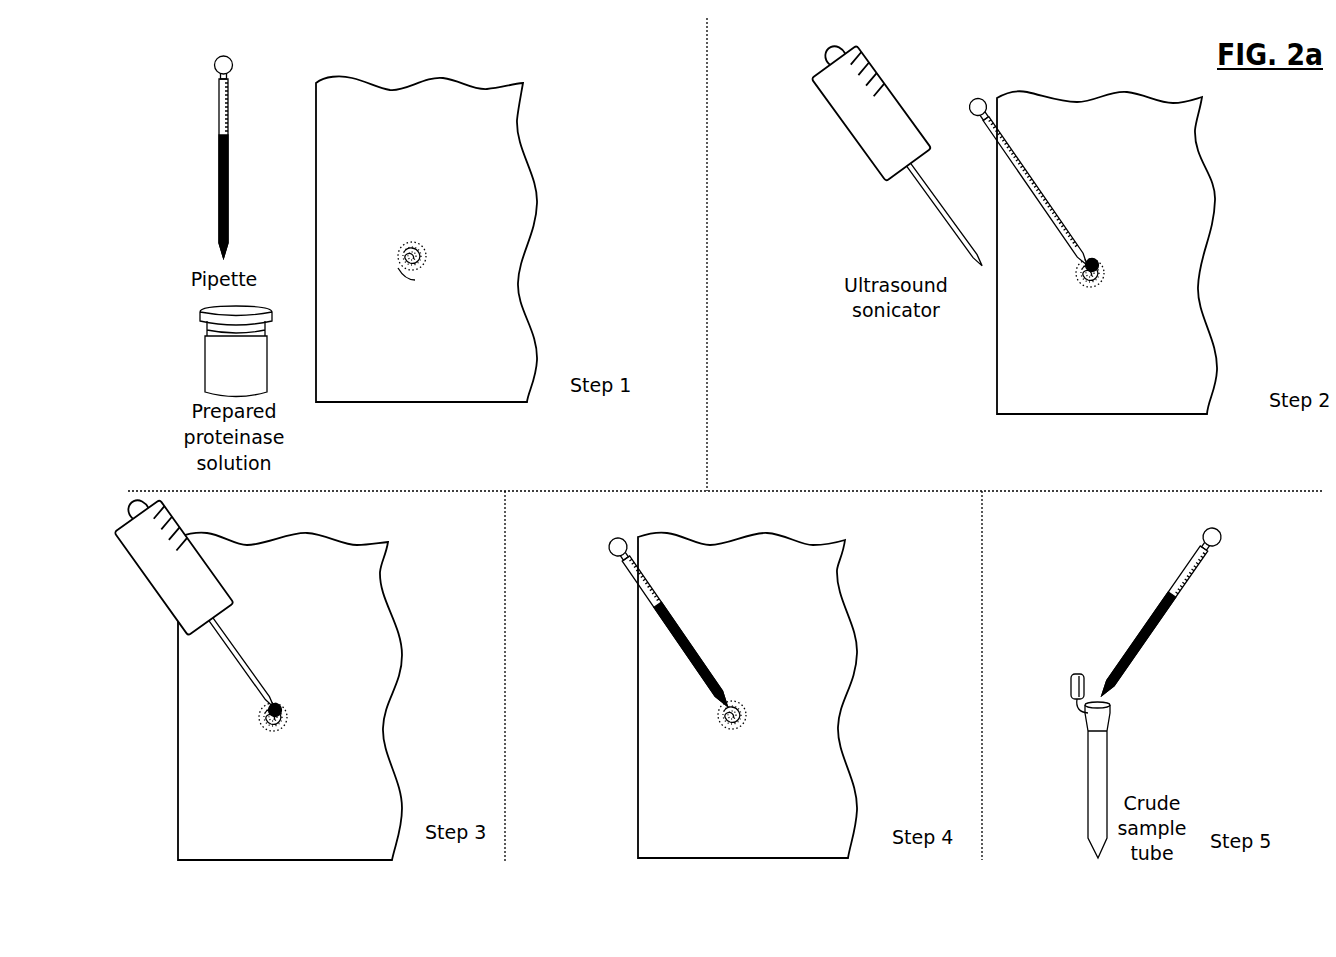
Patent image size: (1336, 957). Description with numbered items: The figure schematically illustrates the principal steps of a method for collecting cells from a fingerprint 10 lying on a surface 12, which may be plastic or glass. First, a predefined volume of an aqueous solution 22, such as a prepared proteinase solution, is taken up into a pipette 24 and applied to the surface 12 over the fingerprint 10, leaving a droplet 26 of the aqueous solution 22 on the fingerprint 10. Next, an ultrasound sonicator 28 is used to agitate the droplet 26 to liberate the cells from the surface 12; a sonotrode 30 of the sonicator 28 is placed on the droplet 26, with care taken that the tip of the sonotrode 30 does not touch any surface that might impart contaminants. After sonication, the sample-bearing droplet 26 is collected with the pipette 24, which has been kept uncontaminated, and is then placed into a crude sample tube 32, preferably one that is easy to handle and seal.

The fingerprint 10 is at (425, 278).
The surface 12 is at (510, 380).
The aqueous solution 22 is at (223, 378).
The pipette 24 is at (228, 160).
The droplet 26 is at (1103, 257).
The ultrasound sonicator 28 is at (862, 127).
The sonotrode 30 is at (937, 210).
The crude sample tube 32 is at (1095, 787).